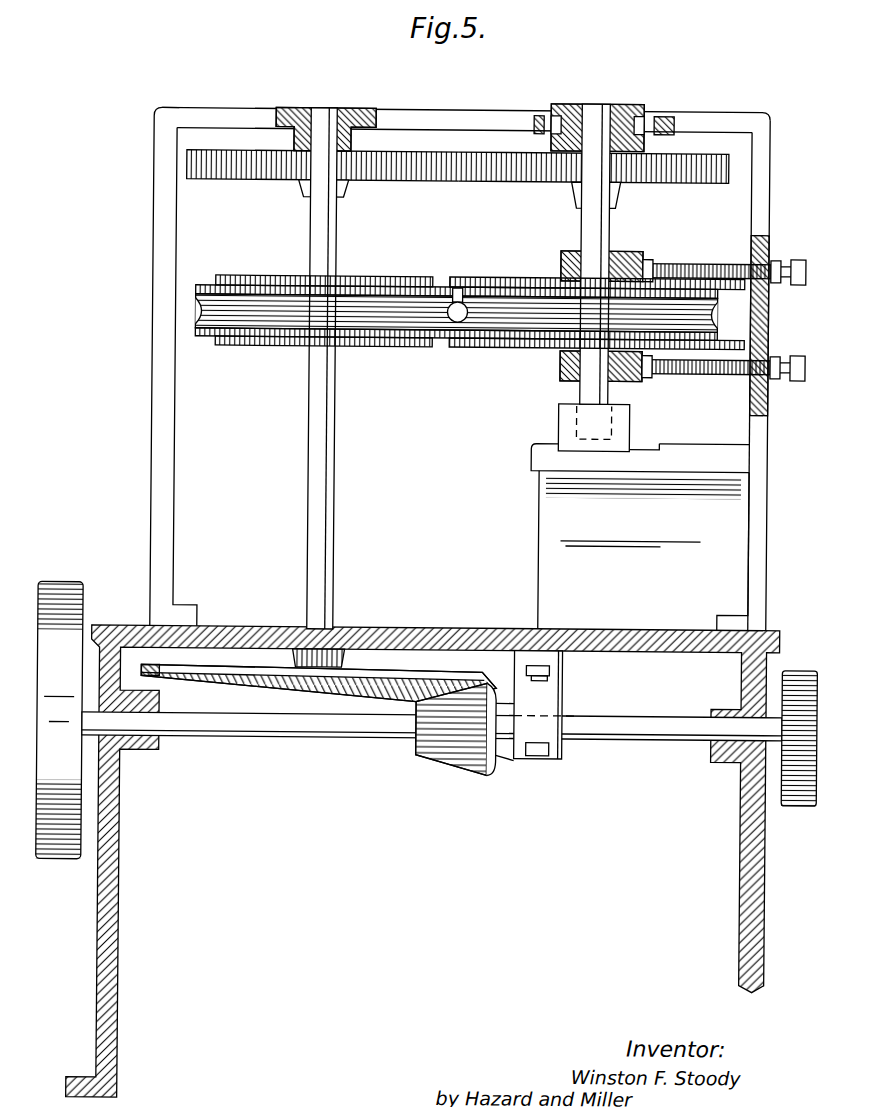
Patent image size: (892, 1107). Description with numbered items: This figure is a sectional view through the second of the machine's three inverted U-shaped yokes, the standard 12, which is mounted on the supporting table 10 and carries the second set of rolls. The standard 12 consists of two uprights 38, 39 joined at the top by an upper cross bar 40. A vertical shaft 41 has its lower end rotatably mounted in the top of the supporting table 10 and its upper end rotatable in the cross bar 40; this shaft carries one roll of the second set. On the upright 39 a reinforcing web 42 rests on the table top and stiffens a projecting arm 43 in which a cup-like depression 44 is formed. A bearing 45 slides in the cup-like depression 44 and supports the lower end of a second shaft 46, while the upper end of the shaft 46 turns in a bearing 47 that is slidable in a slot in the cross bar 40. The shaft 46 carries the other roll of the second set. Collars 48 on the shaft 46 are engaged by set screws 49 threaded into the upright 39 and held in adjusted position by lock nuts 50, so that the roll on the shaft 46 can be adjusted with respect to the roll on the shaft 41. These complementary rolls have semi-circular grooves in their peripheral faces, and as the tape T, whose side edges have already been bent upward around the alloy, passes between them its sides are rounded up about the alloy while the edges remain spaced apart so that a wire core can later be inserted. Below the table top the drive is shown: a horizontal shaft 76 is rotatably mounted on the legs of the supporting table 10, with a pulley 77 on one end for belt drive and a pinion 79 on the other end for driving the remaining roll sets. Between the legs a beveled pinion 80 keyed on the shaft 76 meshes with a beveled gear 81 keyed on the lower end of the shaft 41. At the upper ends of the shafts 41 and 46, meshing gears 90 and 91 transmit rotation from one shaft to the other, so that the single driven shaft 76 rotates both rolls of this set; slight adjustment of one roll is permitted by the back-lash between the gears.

The supporting table 10 is at (742, 850).
The standard 12 is at (756, 166).
The upright 38 is at (150, 410).
The upright 39 is at (750, 545).
The upper cross bar 40 is at (237, 113).
The vertical shaft 41 is at (318, 470).
The reinforcing web 42 is at (548, 530).
The projecting arm 43 is at (688, 455).
The cup-like depression 44 is at (640, 447).
The bearing 45 is at (557, 424).
The shaft 46 is at (592, 245).
The bearing 47 is at (630, 108).
The collars 48 is at (558, 263).
The set screws 49 is at (700, 262).
The lock nuts 50 is at (776, 261).
The horizontal shaft 76 is at (675, 731).
The pulley 77 is at (72, 843).
The pinion 79 is at (796, 682).
The beveled pinion 80 is at (476, 762).
The beveled gear 81 is at (398, 668).
The gear 90 is at (377, 164).
The gear 91 is at (488, 163).
The tape T is at (445, 319).